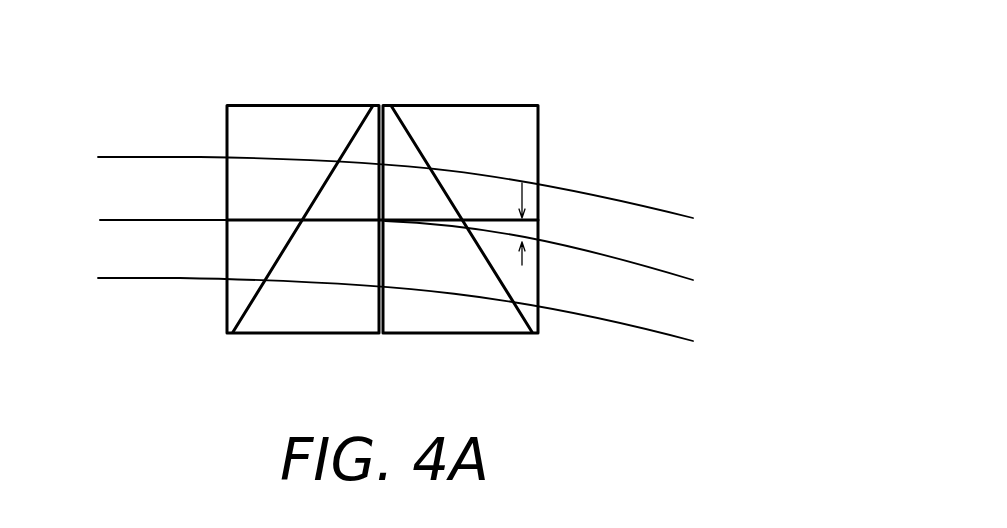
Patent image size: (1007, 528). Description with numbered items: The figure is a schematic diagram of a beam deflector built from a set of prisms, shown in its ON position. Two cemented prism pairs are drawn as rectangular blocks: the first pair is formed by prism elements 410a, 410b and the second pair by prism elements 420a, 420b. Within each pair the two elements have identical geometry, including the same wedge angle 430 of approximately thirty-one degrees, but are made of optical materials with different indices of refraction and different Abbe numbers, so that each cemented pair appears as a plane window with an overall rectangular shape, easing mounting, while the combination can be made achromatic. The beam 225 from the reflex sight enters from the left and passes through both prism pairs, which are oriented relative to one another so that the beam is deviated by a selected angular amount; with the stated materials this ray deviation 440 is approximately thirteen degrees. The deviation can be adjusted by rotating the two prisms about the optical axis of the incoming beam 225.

The beam 225 is at (193, 157).
The first prism element 410a is at (331, 118).
The second prism element 410b is at (333, 320).
The first prism element 420a is at (430, 115).
The second prism element 420b is at (437, 310).
The wedge angle 430 is at (556, 344).
The ray deviation 440 is at (537, 231).